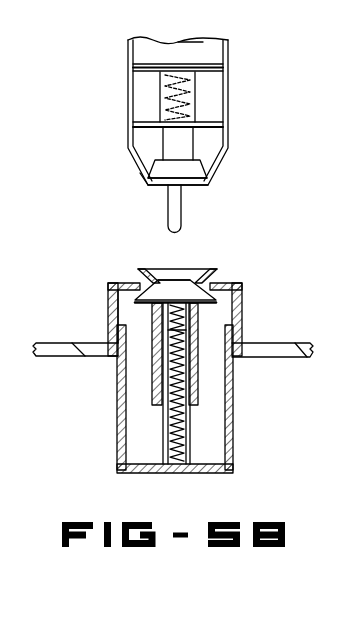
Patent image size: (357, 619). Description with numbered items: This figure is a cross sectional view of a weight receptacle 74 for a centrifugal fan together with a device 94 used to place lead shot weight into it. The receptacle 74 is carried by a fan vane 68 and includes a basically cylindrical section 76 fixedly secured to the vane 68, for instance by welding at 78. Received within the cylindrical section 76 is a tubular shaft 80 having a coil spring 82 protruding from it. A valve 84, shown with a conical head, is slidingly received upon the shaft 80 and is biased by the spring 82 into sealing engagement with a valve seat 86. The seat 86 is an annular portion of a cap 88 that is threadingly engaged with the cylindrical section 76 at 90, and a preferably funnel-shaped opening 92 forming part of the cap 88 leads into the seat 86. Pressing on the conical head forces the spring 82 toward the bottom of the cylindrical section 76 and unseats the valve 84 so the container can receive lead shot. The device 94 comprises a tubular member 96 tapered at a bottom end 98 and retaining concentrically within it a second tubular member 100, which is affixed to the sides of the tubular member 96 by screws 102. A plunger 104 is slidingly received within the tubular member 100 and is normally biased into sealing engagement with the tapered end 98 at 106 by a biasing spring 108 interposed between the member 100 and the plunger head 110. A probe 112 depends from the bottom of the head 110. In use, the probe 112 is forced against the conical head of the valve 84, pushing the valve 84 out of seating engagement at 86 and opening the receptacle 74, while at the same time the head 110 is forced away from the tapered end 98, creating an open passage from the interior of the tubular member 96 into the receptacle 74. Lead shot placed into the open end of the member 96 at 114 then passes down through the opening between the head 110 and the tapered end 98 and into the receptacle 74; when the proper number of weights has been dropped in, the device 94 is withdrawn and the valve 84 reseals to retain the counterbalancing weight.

The fan vane 68 is at (72, 358).
The weight receptacle 74 is at (171, 357).
The cylindrical section 76 is at (234, 430).
The weld 78 is at (235, 357).
The tubular shaft 80 is at (186, 445).
The coil spring 82 is at (170, 437).
The valve 84 is at (214, 301).
The valve seat 86 is at (160, 277).
The cap 88 is at (108, 298).
The threaded engagement 90 is at (115, 336).
The funnel-shaped opening 92 is at (200, 270).
The device 94 is at (156, 125).
The tubular member 96 is at (228, 66).
The tapered bottom end 98 is at (222, 160).
The second tubular member 100 is at (196, 104).
The screws 102 is at (226, 123).
The plunger 104 is at (200, 181).
The sealing engagement location 106 is at (146, 186).
The biasing spring 108 is at (158, 125).
The plunger head 110 is at (158, 170).
The probe 112 is at (182, 226).
The open end 114 is at (199, 52).